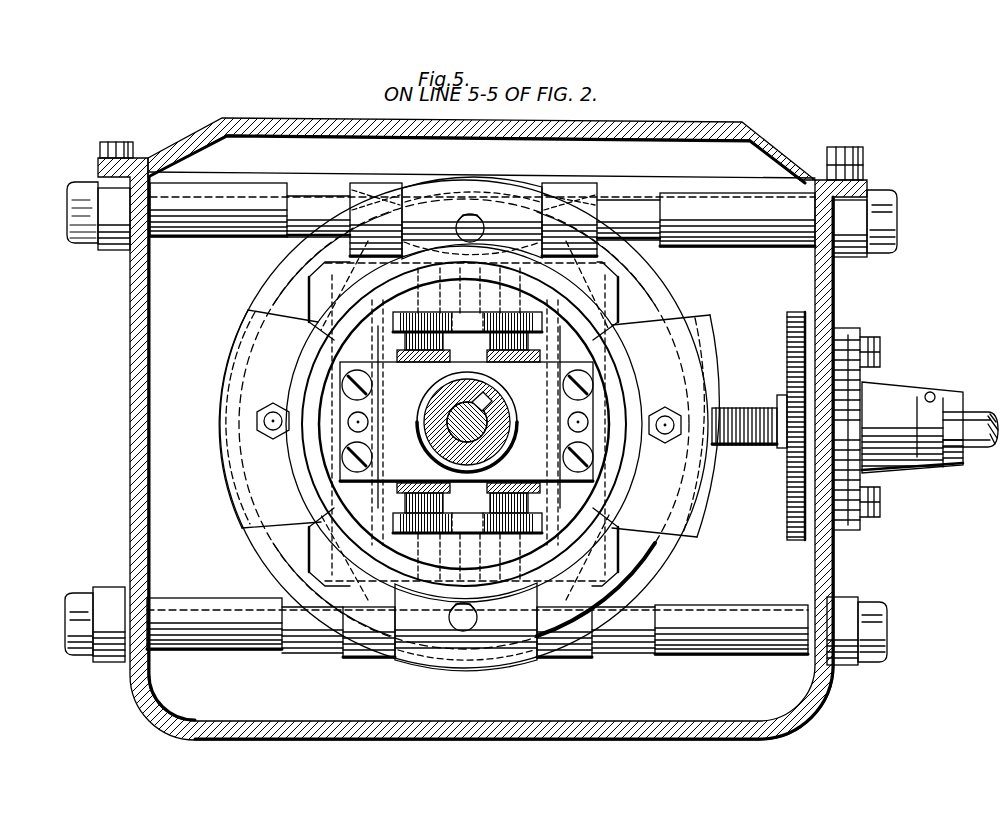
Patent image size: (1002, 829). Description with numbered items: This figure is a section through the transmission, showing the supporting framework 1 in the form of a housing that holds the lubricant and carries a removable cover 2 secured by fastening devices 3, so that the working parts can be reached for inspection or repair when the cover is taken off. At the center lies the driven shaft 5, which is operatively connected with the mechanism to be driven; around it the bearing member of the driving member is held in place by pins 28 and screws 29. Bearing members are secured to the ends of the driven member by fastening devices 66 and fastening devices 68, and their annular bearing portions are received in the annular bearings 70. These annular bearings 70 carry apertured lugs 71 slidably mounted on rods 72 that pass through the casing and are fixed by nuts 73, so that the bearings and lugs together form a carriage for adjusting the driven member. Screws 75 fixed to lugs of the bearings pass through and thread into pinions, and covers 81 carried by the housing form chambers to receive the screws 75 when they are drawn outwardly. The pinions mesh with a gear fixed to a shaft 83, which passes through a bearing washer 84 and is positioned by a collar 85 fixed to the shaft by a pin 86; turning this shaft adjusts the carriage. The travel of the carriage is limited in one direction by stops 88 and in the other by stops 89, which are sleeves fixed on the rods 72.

The supporting framework 1 is at (133, 360).
The removable cover 2 is at (352, 122).
The fastening devices 3 is at (118, 146).
The driven shaft 5 is at (441, 442).
The pins 28 is at (368, 422).
The screws 29 is at (376, 383).
The fastening devices 66 is at (271, 440).
The fastening devices 68 is at (474, 226).
The annular bearings 70 is at (645, 552).
The apertured lugs 71 is at (368, 190).
The rods 72 is at (630, 208).
The nuts 73 is at (80, 246).
The screws 75 is at (740, 420).
The covers 81 is at (938, 472).
The shaft 83 is at (972, 424).
The bearing washer 84 is at (912, 427).
The collar 85 is at (917, 410).
The pin 86 is at (932, 394).
The stops 88 is at (214, 240).
The stops 89 is at (742, 250).